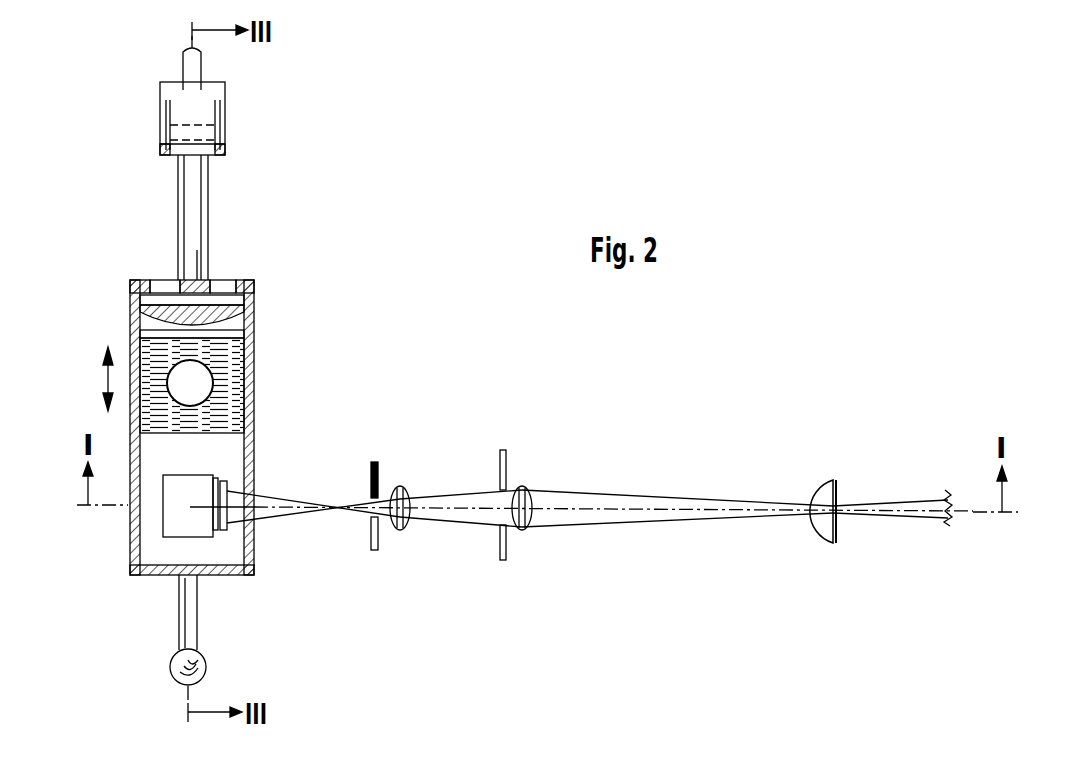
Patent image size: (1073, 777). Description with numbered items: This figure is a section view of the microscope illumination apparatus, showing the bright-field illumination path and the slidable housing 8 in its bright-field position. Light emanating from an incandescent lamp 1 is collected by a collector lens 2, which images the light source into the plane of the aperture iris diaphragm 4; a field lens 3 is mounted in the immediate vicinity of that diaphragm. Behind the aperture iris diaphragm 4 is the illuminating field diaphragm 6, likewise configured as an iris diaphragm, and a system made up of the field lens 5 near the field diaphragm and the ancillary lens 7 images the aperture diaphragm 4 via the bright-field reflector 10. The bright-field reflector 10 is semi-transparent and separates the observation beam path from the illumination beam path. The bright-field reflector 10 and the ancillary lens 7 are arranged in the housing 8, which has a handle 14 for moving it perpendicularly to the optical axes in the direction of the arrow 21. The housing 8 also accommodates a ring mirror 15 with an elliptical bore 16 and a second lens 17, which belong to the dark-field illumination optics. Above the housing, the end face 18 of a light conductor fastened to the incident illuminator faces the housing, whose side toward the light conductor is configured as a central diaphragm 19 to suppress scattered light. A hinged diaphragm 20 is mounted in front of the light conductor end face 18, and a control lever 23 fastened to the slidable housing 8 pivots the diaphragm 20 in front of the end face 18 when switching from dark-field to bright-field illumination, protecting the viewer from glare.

The incandescent lamp 1 is at (950, 528).
The collector lens 2 is at (826, 530).
The field lens 3 is at (522, 530).
The aperture iris diaphragm 4 is at (502, 545).
The field lens 5 is at (400, 530).
The illuminating field diaphragm 6 is at (374, 540).
The ancillary lens 7 is at (224, 530).
The housing 8 is at (128, 550).
The bright-field reflector 10 is at (200, 482).
The handle 14 is at (190, 620).
The ring mirror 15 is at (232, 415).
The elliptical bore 16 is at (205, 380).
The second lens 17 is at (244, 310).
The end face of light conductor 18 is at (198, 88).
The central diaphragm 19 is at (201, 268).
The hinged diaphragm 20 is at (222, 135).
The arrow 21 is at (104, 386).
The control lever 23 is at (196, 205).